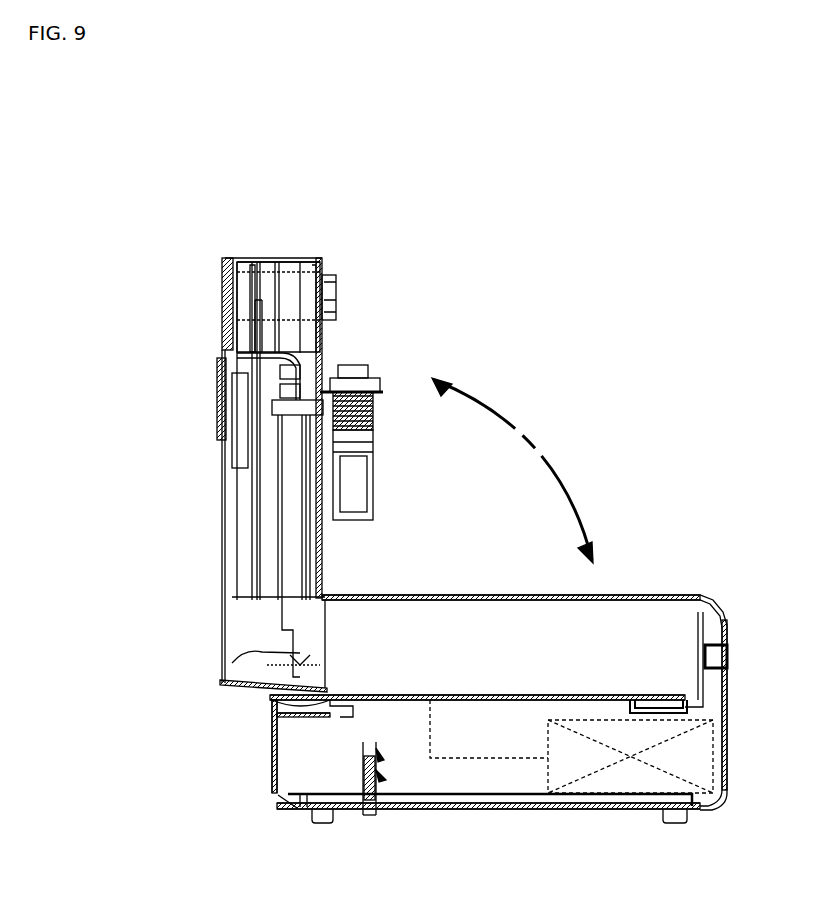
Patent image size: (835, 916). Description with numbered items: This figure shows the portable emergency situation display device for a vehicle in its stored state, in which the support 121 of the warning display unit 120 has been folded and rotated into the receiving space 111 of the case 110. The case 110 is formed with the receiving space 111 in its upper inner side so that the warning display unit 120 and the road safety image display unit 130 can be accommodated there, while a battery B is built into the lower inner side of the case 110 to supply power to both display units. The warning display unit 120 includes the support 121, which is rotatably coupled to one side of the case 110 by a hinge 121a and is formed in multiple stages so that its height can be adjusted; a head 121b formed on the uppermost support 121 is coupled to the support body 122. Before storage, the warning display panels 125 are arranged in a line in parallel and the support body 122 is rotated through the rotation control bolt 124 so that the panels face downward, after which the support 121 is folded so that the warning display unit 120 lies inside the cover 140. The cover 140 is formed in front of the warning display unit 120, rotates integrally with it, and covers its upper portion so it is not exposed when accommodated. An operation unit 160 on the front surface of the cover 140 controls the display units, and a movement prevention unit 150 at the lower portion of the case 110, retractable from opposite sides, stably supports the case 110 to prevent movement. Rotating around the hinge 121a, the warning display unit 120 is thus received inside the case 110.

The case 110 is at (515, 807).
The receiving space 111 is at (647, 645).
The warning display unit 120 is at (274, 260).
The support 121 is at (323, 553).
The hinge 121a is at (300, 660).
The head 121b is at (314, 268).
The support body 122 is at (252, 270).
The rotation control bolt 124 is at (338, 290).
The warning display panel 125 is at (250, 535).
The road safety image display unit 130 is at (374, 470).
The cover 140 is at (220, 485).
The movement prevention unit 150 is at (383, 778).
The operation unit 160 is at (218, 412).
The battery B is at (657, 767).